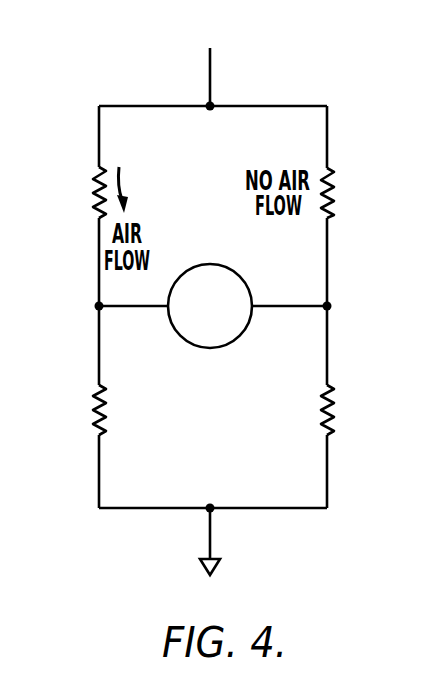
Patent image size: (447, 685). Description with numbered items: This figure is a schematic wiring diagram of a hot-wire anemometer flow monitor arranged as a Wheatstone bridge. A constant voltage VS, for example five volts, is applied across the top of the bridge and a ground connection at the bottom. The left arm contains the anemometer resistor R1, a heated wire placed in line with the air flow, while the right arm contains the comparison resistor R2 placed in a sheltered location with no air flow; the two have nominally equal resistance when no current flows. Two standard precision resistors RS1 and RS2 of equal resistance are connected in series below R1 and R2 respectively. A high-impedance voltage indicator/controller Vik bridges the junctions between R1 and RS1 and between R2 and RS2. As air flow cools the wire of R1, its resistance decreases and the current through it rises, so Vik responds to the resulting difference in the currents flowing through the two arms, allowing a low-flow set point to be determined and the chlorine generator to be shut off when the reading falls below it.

The constant voltage VS is at (213, 56).
The anemometer resistor R1 is at (81, 191).
The comparison resistor R2 is at (346, 192).
The standard precision resistor RS1 is at (77, 417).
The standard precision resistor RS2 is at (351, 416).
The high-impedance voltage indicator/controller Vik is at (210, 306).